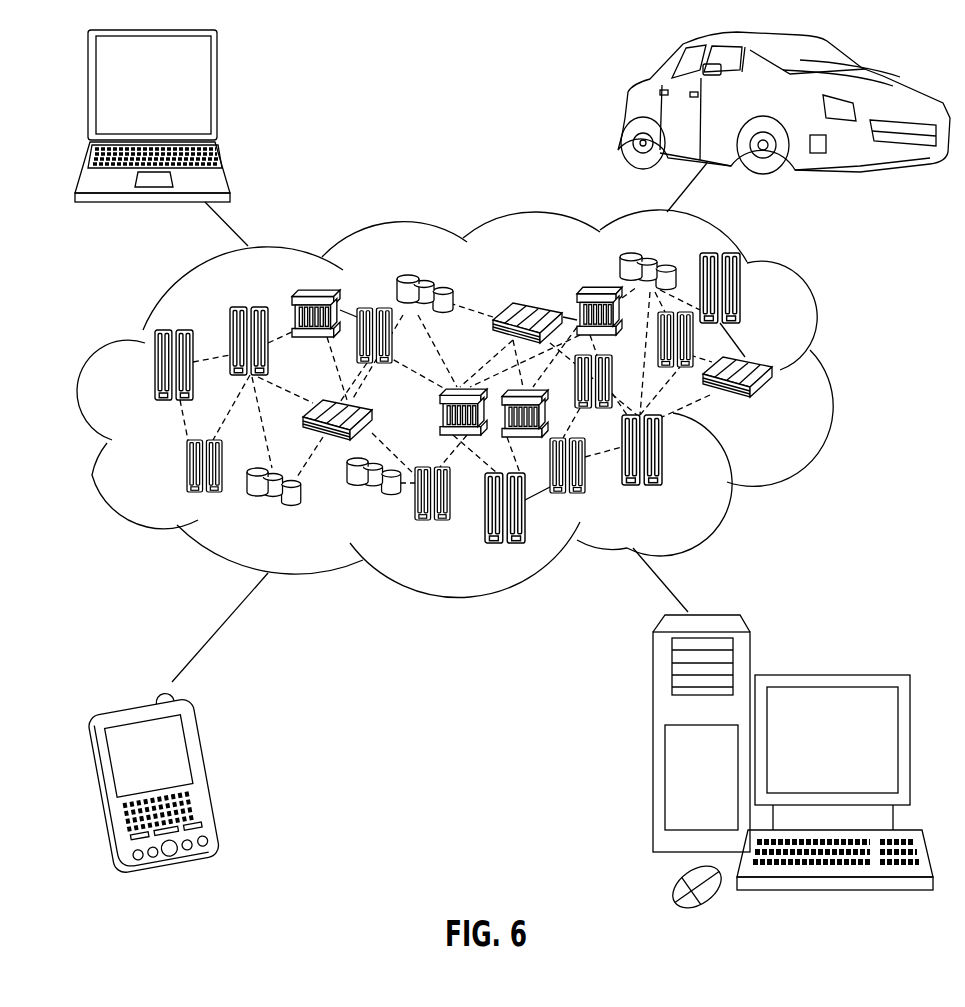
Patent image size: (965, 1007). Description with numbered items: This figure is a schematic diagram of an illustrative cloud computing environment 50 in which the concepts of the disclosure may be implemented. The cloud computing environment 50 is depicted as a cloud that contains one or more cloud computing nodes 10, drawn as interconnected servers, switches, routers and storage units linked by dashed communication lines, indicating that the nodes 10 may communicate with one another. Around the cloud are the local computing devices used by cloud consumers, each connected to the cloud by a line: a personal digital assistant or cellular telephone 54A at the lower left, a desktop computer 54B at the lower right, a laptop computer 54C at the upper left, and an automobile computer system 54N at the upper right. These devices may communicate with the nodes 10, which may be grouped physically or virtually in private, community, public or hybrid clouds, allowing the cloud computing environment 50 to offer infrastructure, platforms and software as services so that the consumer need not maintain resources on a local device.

The cloud computing node 10 is at (787, 417).
The cloud computing environment 50 is at (832, 377).
The personal digital assistant or cellular telephone 54A is at (208, 770).
The desktop computer 54B is at (830, 675).
The laptop computer 54C is at (218, 92).
The automobile computer system 54N is at (627, 108).